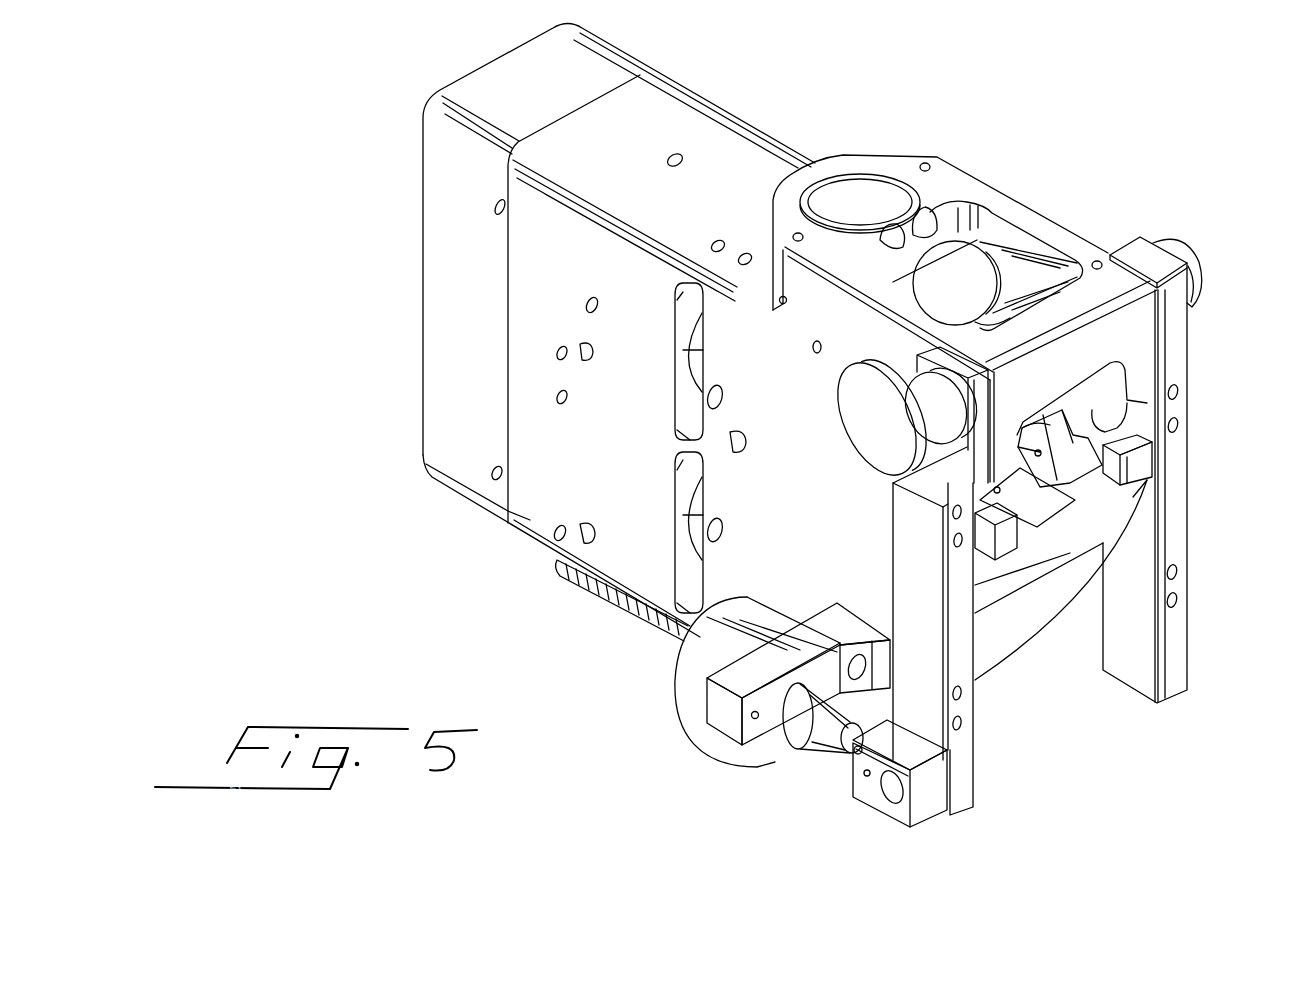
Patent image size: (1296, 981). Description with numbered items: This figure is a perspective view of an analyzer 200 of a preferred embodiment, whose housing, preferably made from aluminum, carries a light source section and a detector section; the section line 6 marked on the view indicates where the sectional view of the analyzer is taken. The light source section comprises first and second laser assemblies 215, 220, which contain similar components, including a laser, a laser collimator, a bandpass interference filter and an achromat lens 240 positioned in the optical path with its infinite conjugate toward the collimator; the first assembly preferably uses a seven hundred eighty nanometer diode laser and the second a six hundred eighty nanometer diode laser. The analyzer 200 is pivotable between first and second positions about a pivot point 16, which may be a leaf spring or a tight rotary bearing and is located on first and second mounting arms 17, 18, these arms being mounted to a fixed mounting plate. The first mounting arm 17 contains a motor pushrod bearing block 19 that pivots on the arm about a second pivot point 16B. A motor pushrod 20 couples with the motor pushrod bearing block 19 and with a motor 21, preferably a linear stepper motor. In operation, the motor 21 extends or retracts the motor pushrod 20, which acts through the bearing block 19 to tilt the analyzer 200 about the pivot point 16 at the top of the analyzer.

The analyzer 200 is at (1073, 134).
The section line 6— 6 is at (398, 272).
The achromat lens 240 is at (976, 296).
The pivot point 16 is at (918, 388).
The first laser assembly 215 is at (1087, 457).
The second laser assembly 220 is at (1043, 495).
The first mounting arm 17 is at (905, 563).
The second mounting arm 18 is at (1140, 603).
The motor 21 is at (743, 615).
The motor pushrod 20 is at (833, 752).
The motor pushrod bearing block 19 is at (897, 741).
The second pivot point 16B is at (890, 787).